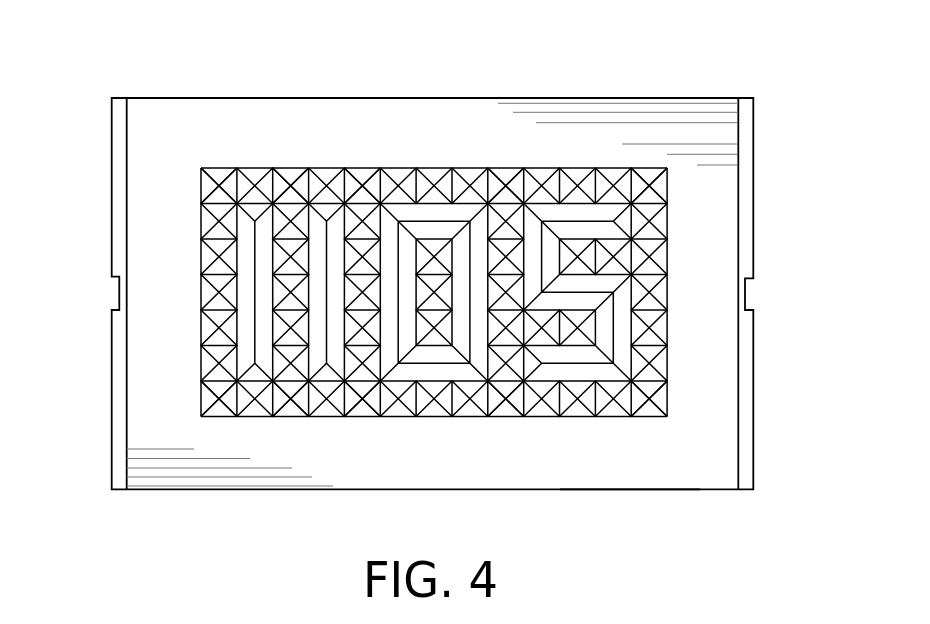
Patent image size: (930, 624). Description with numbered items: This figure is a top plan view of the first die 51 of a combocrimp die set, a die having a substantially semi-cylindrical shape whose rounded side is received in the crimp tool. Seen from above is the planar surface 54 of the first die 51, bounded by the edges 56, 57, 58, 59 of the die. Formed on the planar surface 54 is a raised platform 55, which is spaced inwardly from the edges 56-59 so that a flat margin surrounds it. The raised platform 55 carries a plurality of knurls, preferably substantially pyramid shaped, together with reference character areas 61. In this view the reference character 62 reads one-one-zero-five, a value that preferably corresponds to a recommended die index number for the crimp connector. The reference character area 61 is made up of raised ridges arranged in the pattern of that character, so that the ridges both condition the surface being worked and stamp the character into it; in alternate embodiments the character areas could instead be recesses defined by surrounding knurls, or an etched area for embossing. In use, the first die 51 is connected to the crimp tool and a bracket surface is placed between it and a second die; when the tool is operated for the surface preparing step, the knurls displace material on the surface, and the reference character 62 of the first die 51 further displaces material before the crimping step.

The first die 51 is at (262, 84).
The planar surface 54 is at (152, 424).
The raised platform 55 is at (402, 168).
The edge 56 is at (620, 482).
The edge 57 is at (127, 232).
The edge 58 is at (498, 98).
The edge 59 is at (738, 215).
The reference character area 61 is at (210, 193).
The reference character 62 is at (218, 325).